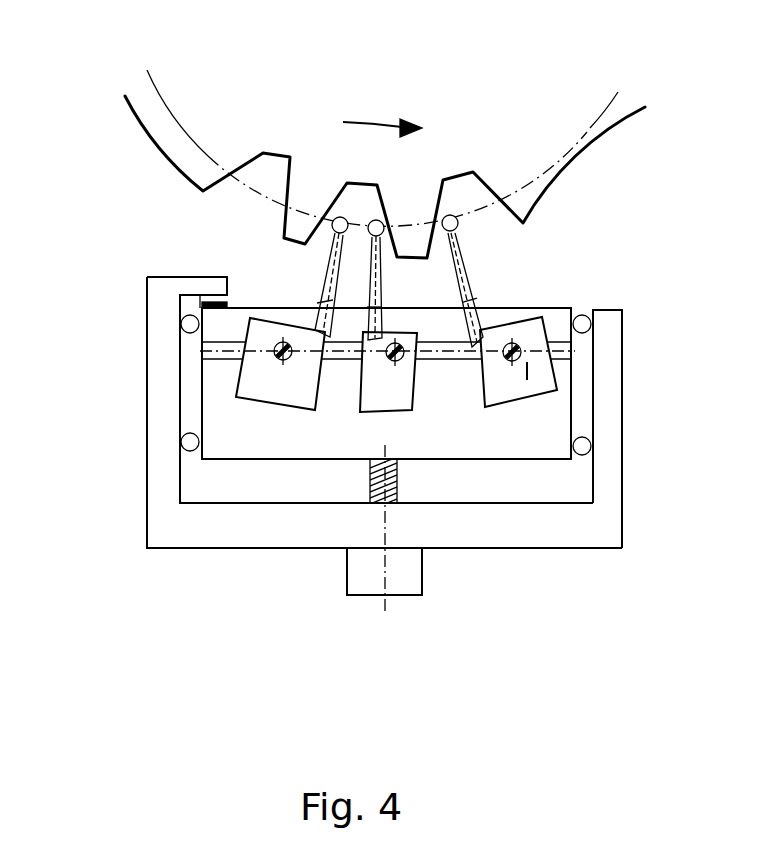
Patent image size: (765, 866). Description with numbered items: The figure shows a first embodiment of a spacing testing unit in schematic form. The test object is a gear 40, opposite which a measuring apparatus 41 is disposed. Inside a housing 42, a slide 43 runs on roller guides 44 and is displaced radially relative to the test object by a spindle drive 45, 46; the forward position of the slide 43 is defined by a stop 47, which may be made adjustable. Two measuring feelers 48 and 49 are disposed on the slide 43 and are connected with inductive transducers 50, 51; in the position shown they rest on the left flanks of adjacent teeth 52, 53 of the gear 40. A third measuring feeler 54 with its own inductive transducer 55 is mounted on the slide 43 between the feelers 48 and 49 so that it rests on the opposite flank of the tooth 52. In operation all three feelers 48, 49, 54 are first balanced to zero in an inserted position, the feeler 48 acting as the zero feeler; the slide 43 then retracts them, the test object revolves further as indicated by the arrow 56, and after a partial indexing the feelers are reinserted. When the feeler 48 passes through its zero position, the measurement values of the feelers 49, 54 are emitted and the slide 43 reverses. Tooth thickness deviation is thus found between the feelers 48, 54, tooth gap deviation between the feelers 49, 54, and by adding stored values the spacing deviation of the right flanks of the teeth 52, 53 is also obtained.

The gear 40 is at (620, 142).
The measuring apparatus 41 is at (108, 482).
The housing 42 is at (603, 460).
The slide 43 is at (300, 440).
The roller guides 44 is at (182, 440).
The spindle drive 45 is at (400, 483).
The spindle drive 46 is at (403, 583).
The stop 47 is at (210, 296).
The measuring feeler 48 is at (458, 222).
The measuring feeler 49 is at (335, 231).
The inductive transducer 50 is at (528, 378).
The inductive transducer 51 is at (255, 387).
The tooth 52 is at (417, 200).
The tooth 53 is at (310, 197).
The third measuring feeler 54 is at (363, 197).
The inductive transducer 55 is at (391, 384).
The arrow 56 is at (407, 115).